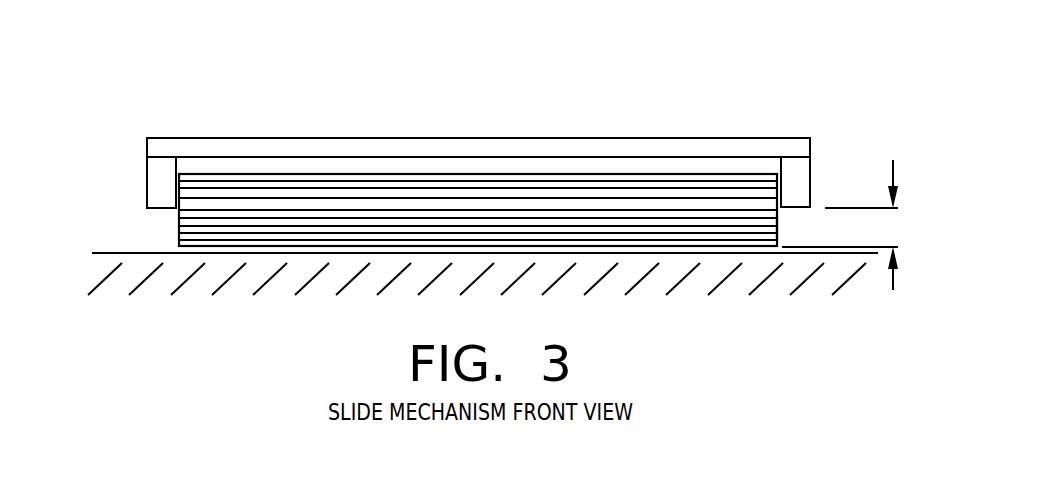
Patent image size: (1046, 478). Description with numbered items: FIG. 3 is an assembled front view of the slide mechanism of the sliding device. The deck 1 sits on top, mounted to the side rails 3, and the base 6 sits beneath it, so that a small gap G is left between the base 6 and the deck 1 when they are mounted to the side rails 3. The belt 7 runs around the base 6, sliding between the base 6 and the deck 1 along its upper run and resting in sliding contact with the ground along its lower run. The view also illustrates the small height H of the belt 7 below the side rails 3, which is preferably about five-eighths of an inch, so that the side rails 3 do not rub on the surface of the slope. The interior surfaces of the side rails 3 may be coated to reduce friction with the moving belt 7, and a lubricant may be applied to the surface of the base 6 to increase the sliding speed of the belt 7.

The deck 1 is at (445, 138).
The side rails 3 is at (147, 160).
The base 6 is at (778, 226).
The belt 7 is at (190, 226).
The gap G is at (305, 163).
The height H is at (843, 225).